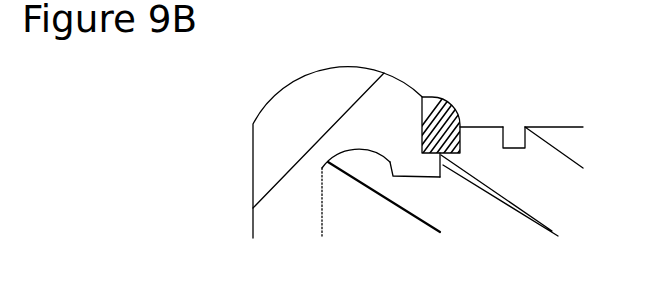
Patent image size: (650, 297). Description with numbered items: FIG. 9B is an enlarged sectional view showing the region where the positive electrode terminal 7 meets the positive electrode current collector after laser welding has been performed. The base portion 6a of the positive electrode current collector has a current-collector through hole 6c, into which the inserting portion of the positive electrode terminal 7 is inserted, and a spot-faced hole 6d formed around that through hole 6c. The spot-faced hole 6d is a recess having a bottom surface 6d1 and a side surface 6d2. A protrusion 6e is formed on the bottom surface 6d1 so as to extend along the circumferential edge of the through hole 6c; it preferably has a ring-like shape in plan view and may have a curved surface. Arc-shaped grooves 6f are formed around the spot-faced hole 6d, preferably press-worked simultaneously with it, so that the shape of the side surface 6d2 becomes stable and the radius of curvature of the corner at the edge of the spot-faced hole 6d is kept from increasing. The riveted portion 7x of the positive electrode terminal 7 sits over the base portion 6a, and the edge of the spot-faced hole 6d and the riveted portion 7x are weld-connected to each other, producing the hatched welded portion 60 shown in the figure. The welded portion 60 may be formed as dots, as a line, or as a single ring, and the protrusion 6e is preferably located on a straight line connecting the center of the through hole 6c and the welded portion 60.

The positive electrode terminal 7 is at (266, 103).
The riveted portion 7x is at (348, 97).
The current-collector through hole 6c is at (322, 216).
The protrusion 6e is at (362, 164).
The spot-faced hole 6d is at (412, 168).
The bottom surface 6d1 is at (423, 179).
The side surface 6d2 is at (455, 181).
The welded portion 60 is at (445, 110).
The groove 6f is at (515, 147).
The base portion 6a is at (562, 122).